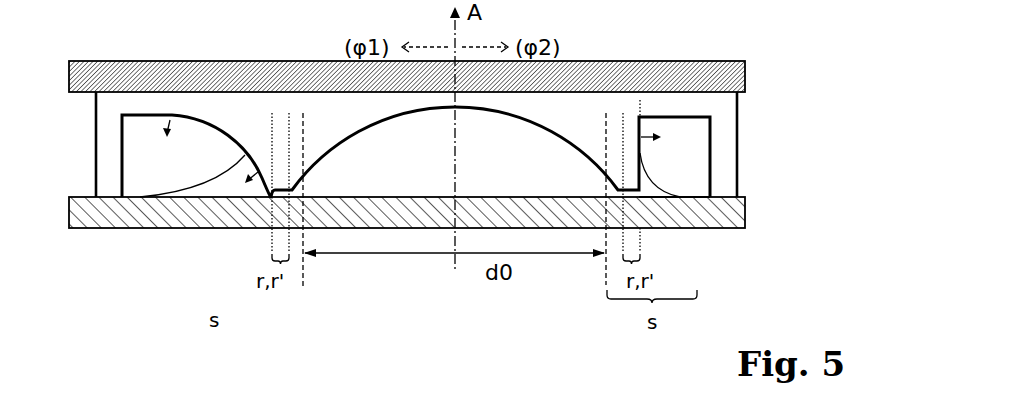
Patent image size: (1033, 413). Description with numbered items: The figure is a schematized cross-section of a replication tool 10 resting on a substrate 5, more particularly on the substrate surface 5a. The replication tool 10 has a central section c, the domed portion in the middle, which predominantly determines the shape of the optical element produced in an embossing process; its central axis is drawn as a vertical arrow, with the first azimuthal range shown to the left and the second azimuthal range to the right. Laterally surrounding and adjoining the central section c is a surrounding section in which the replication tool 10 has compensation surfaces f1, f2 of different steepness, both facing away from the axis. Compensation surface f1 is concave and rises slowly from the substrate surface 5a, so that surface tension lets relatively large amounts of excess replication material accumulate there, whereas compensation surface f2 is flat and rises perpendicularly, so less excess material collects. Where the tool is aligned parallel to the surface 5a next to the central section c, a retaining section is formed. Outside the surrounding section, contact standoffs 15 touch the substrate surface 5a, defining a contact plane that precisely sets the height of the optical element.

The replication tool 10 is at (784, 99).
The contact standoff 15 is at (108, 176).
The substrate 5 is at (728, 208).
The substrate surface 5a is at (696, 197).
The central section c is at (362, 132).
The first compensation surface f1 is at (211, 150).
The second compensation surface f2 is at (642, 128).